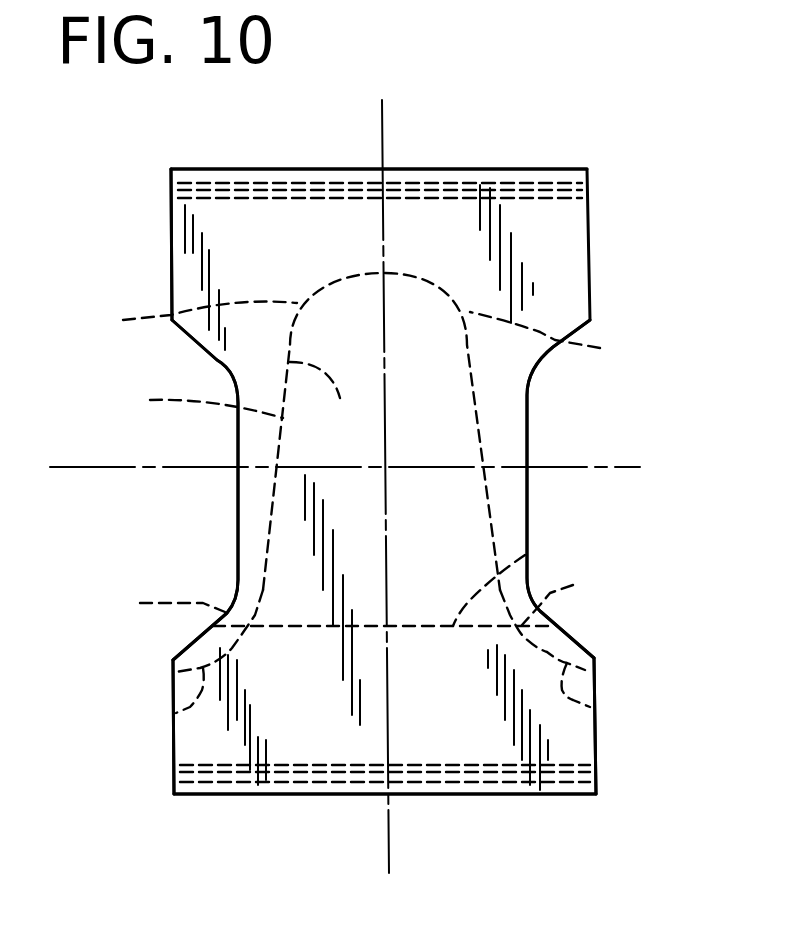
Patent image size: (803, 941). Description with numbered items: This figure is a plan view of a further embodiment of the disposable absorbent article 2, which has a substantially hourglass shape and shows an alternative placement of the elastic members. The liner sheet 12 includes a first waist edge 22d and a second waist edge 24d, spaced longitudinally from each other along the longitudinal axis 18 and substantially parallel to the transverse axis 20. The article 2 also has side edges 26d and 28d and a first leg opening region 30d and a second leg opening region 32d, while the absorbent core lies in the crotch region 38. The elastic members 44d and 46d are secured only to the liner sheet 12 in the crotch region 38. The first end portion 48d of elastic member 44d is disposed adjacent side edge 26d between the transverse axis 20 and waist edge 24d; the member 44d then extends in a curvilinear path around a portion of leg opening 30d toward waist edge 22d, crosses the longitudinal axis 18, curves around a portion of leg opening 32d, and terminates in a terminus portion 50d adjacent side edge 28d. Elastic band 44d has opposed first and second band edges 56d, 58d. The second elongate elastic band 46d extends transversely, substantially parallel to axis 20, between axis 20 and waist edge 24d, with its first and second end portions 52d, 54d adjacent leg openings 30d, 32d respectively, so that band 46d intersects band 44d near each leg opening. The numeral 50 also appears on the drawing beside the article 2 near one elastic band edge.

The absorbent article 2 is at (133, 278).
The liner sheet 12 is at (285, 745).
The longitudinal axis 18 is at (382, 148).
The transverse axis 20 is at (177, 468).
The first waist edge 22d is at (473, 163).
The second waist edge 24d is at (480, 795).
The side edge 26d is at (171, 233).
The side edge 28d is at (597, 752).
The first leg opening region 30d is at (238, 530).
The second leg opening region 32d is at (528, 510).
The crotch region 38 is at (460, 585).
The elastic member 44d is at (179, 400).
The second elongate elastic band 46d is at (525, 555).
The first end portion 48d is at (176, 713).
The elastic member 50 is at (565, 342).
The terminus portion 50d is at (596, 707).
The first end portion 52d is at (145, 607).
The second end portion 54d is at (588, 594).
The first elastic band edge 56d is at (332, 407).
The second elastic band edge 58d is at (172, 313).